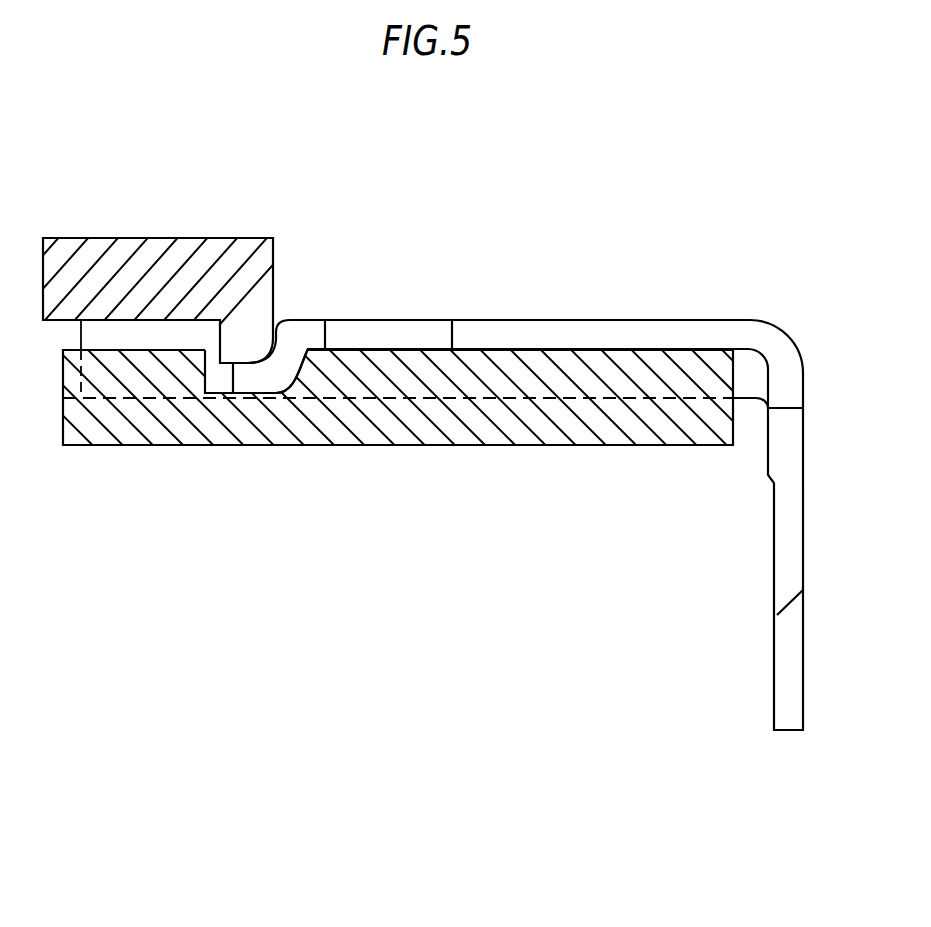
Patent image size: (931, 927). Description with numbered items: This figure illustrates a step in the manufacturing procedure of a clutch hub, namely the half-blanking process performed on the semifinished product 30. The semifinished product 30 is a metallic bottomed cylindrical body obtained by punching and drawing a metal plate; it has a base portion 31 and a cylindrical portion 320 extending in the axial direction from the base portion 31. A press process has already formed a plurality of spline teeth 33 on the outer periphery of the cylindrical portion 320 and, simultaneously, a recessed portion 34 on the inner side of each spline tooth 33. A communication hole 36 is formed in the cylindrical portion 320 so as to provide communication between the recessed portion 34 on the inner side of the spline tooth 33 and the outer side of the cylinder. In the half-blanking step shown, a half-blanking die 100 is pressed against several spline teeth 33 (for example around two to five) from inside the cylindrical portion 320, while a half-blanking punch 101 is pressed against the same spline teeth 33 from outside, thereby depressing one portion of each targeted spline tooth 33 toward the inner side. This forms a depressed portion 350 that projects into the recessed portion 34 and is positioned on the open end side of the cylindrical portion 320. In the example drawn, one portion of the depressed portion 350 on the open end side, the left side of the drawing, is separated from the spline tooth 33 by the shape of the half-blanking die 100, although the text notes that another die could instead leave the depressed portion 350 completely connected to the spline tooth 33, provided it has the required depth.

The half-blanking punch 101 is at (105, 247).
The half-blanking die 100 is at (592, 446).
The depressed portion 350 is at (265, 375).
The communication hole 36 is at (328, 330).
The spline tooth 33 is at (482, 320).
The cylindrical portion 320 is at (648, 333).
The semifinished product 30 is at (784, 329).
The recessed portion 34 is at (756, 379).
The base portion 31 is at (788, 720).